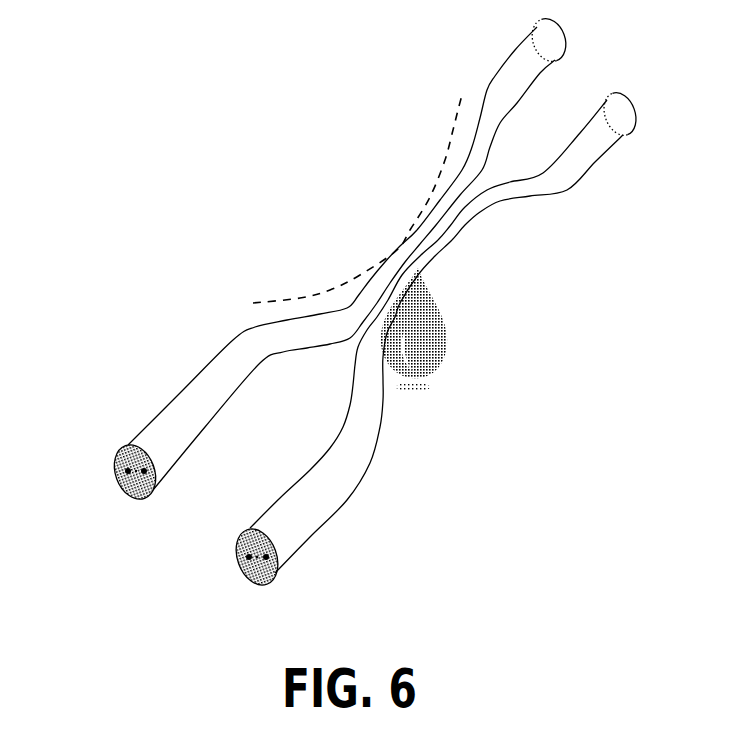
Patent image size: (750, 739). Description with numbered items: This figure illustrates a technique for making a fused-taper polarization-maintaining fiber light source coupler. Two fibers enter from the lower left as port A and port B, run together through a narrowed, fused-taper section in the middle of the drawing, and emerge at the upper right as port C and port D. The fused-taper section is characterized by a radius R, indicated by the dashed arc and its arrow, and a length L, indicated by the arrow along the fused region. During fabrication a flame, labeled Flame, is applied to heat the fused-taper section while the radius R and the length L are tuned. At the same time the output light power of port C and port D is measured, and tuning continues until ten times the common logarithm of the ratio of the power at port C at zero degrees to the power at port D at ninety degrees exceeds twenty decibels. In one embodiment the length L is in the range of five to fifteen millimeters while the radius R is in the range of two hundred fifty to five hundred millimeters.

The port A is at (235, 372).
The port B is at (340, 419).
The port C is at (494, 129).
The port D is at (577, 164).
The radius of the fused-taper section R is at (400, 230).
The length of the fused-taper section L is at (505, 232).
The flame Flame is at (447, 310).